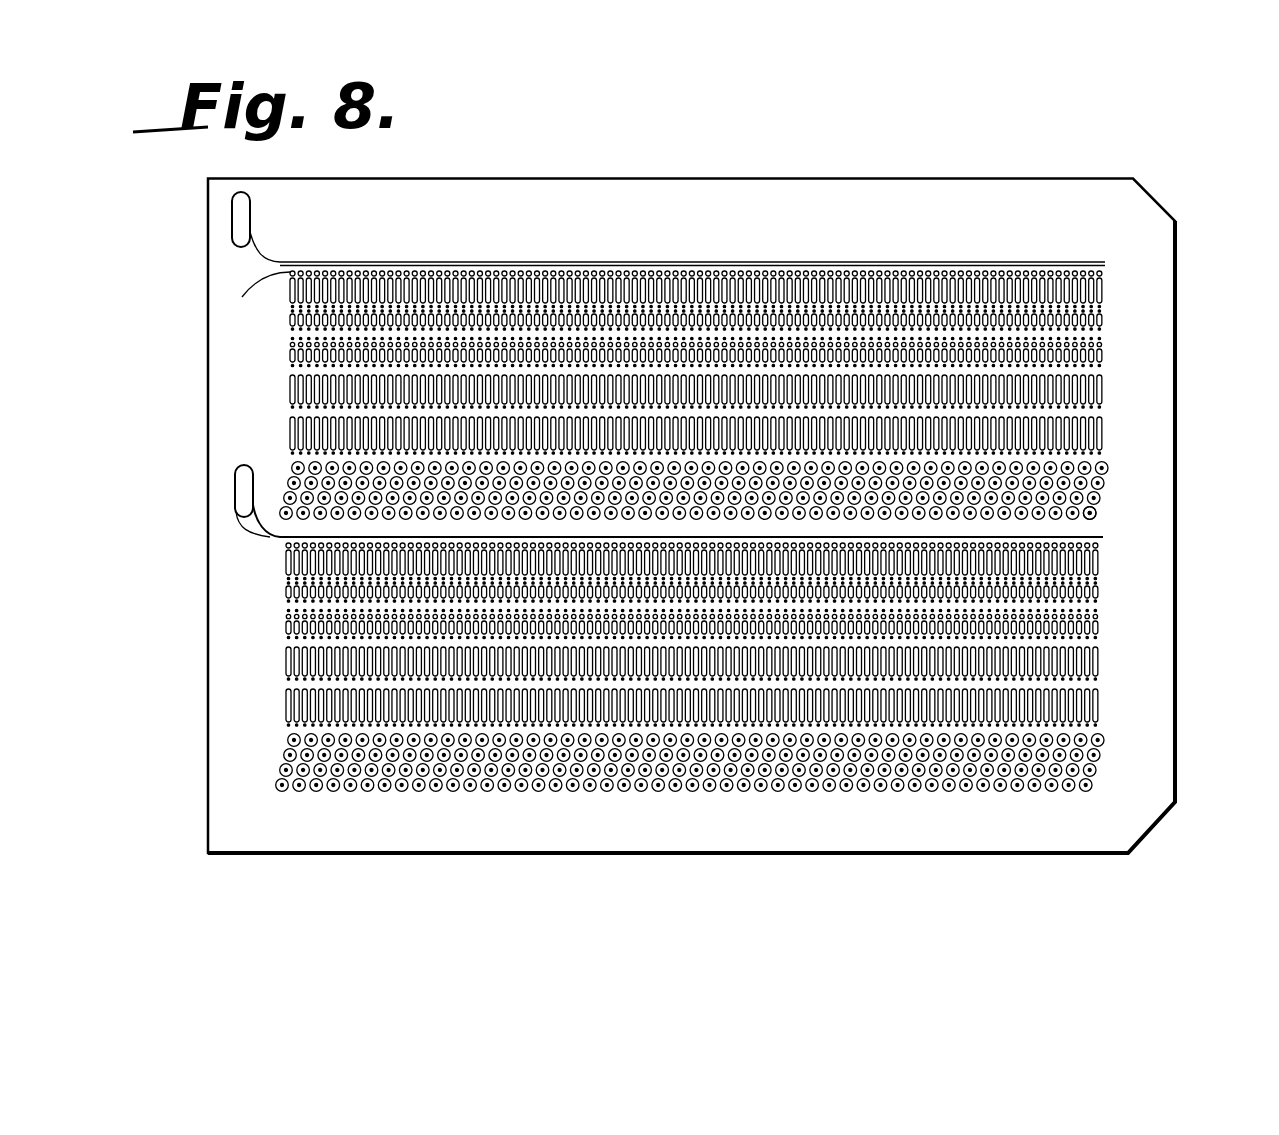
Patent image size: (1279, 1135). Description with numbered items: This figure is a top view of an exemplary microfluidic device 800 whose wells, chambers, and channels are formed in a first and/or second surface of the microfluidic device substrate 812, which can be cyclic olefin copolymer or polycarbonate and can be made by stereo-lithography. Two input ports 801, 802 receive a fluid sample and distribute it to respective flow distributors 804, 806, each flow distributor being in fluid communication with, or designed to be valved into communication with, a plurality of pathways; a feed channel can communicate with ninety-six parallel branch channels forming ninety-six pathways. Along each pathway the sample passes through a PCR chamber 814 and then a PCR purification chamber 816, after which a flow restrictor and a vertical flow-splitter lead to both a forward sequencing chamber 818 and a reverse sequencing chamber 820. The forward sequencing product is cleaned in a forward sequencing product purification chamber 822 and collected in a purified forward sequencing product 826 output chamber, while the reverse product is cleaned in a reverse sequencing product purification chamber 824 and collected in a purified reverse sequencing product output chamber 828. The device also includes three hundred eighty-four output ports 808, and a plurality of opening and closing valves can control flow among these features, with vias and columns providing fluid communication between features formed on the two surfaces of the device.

The microfluidic device 800 is at (1158, 500).
The input port 801 is at (250, 213).
The input port 802 is at (235, 522).
The flow distributor 804 is at (708, 263).
The flow distributor 806 is at (1103, 529).
The output ports 808 is at (1107, 468).
The microfluidic device substrate 812 is at (1176, 748).
The PCR chamber 814 is at (256, 303).
The PCR purification chamber 816 is at (1107, 295).
The forward sequencing chamber 818 is at (1107, 318).
The reverse sequencing chamber 820 is at (1100, 354).
The forward sequencing product purification chamber 822 is at (288, 385).
The reverse sequencing product purification chamber 824 is at (284, 438).
The purified forward sequencing product output chamber 826 is at (1073, 478).
The purified reverse sequencing product output chamber 828 is at (1096, 512).